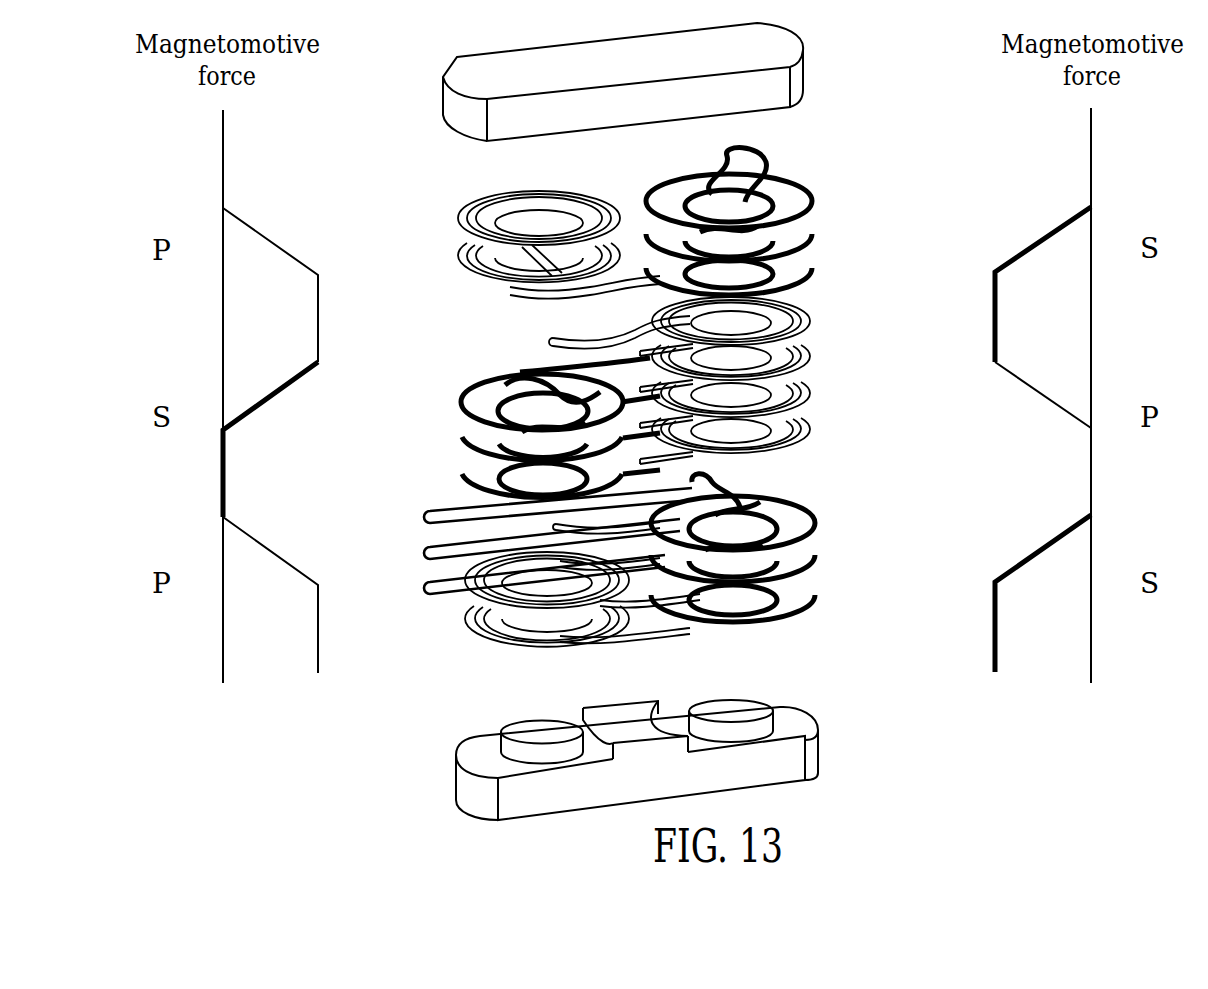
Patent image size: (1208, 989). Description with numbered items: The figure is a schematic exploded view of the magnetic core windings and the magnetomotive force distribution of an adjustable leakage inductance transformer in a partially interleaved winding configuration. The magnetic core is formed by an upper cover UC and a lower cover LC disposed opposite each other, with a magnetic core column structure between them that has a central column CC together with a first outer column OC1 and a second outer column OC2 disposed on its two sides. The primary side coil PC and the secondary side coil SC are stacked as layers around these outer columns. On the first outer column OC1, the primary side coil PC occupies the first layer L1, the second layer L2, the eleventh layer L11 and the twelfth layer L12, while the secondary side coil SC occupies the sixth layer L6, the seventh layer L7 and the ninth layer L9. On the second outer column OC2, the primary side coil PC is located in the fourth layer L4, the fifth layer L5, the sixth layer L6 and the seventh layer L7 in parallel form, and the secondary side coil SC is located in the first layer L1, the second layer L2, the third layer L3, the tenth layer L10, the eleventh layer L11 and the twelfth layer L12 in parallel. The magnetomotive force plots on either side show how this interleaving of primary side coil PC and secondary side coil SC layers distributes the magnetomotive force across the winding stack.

The upper cover UC is at (797, 75).
The lower cover LC is at (812, 757).
The primary side coil PC is at (458, 222).
The secondary side coil SC is at (505, 385).
The central column CC is at (632, 723).
The first outer column OC1 is at (540, 732).
The second outer column OC2 is at (730, 714).
The first layer L1 is at (815, 185).
The second layer L2 is at (815, 227).
The third layer L3 is at (815, 265).
The fourth layer L4 is at (815, 303).
The fifth layer L5 is at (815, 340).
The sixth layer L6 is at (815, 378).
The seventh layer L7 is at (815, 415).
The ninth layer L9 is at (458, 470).
The tenth layer L10 is at (815, 507).
The eleventh layer L11 is at (815, 545).
The twelfth layer L12 is at (815, 583).